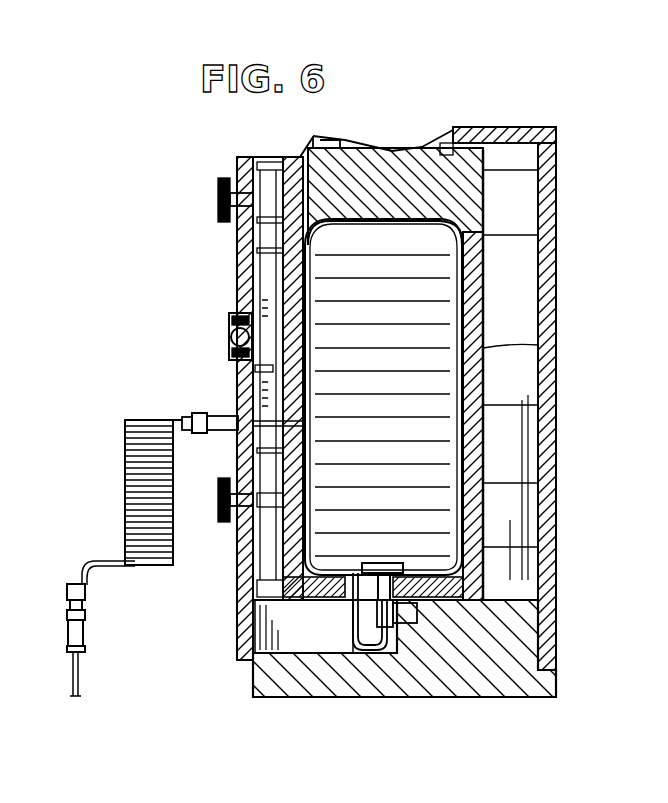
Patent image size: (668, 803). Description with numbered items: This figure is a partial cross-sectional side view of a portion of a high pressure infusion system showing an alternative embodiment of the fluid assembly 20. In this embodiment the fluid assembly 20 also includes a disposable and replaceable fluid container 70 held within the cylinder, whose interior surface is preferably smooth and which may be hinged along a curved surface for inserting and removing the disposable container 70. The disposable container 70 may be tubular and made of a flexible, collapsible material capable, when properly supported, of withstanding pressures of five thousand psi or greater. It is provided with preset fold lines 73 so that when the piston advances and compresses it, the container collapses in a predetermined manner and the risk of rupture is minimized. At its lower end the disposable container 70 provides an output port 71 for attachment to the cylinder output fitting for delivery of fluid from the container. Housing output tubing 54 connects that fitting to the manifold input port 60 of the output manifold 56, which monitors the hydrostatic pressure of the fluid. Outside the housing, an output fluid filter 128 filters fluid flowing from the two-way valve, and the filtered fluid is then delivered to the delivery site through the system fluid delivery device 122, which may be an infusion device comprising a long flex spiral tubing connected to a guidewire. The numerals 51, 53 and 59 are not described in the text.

The fluid assembly 20 is at (484, 251).
The inner housing wall 51 is at (482, 355).
The insulating block 53 is at (425, 206).
The housing output tubing 54 is at (355, 620).
The output manifold 56 is at (226, 347).
The base 59 is at (400, 623).
The manifold input port 60 is at (405, 310).
The disposable fluid container 70 is at (388, 381).
The output port 71 is at (405, 557).
The preset fold lines 73 is at (378, 463).
The system fluid delivery device 122 is at (124, 498).
The output fluid filter 128 is at (186, 416).